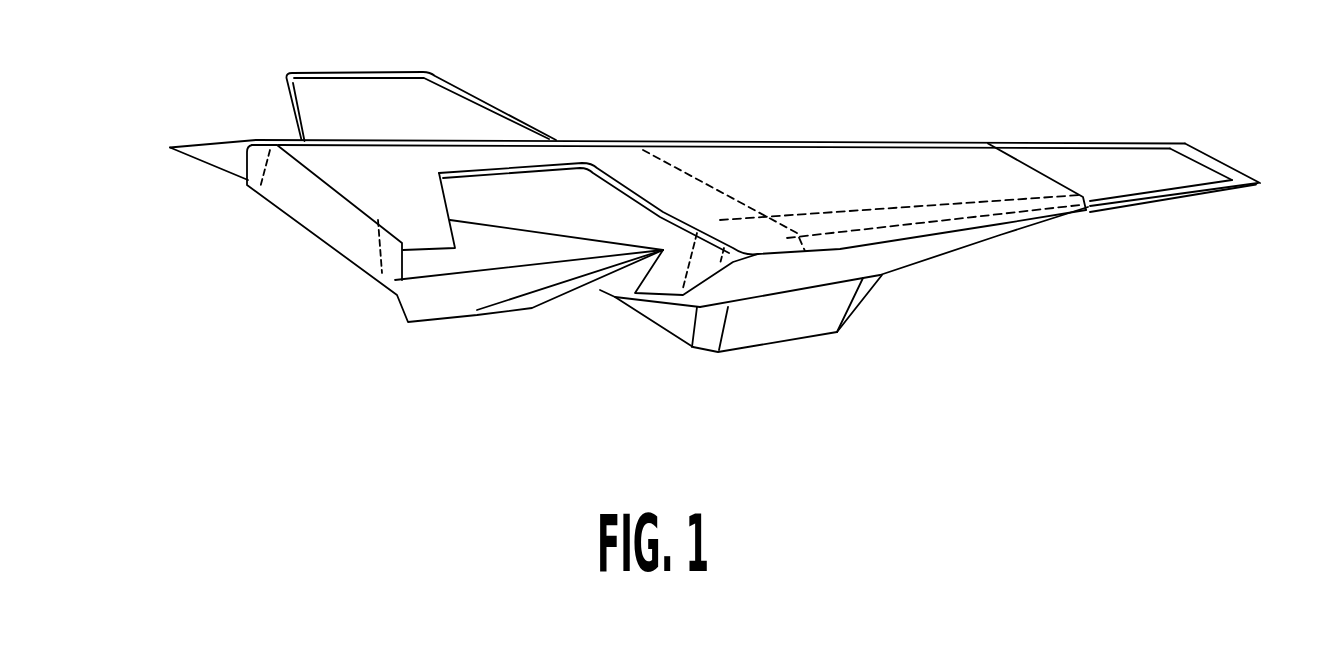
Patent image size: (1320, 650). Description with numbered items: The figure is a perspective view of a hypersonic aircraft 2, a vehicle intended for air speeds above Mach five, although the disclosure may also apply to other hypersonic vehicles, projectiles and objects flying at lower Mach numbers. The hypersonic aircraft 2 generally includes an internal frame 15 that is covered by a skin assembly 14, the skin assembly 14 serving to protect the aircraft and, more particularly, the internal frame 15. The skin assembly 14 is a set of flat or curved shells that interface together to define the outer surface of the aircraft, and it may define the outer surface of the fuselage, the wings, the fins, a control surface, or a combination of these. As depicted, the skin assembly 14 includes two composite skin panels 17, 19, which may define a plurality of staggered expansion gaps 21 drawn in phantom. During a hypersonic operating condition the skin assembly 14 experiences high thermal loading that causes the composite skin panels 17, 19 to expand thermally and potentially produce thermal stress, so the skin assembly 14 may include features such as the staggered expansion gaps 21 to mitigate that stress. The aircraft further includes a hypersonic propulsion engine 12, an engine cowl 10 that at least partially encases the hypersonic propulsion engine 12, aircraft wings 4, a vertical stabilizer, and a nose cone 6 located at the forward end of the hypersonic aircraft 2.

The hypersonic aircraft 2 is at (1045, 60).
The aircraft wings 4 is at (1057, 220).
The nose cone 6 is at (1258, 183).
The engine cowl 10 is at (875, 300).
The hypersonic propulsion engine 12 is at (750, 335).
The skin assembly 14 is at (782, 157).
The internal frame 15 is at (913, 240).
The composite skin panel 17 is at (870, 158).
The composite skin panel 19 is at (617, 167).
The staggered expansion gaps 21 is at (688, 170).